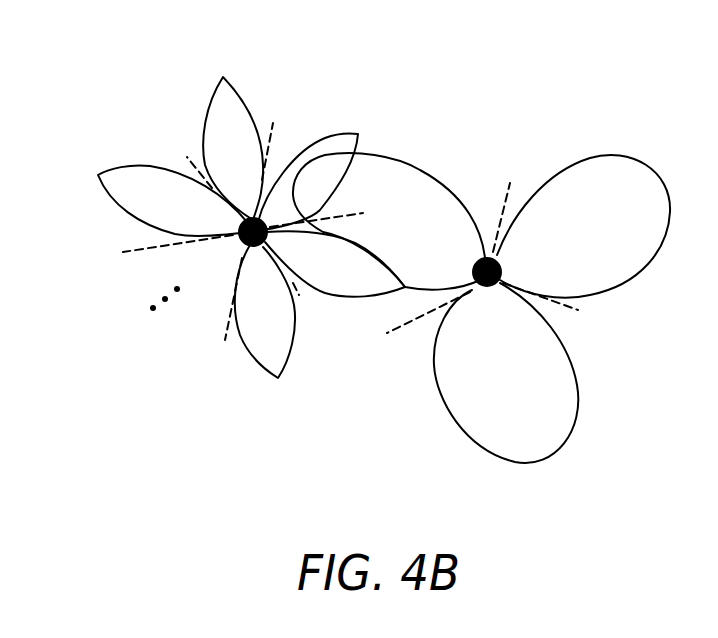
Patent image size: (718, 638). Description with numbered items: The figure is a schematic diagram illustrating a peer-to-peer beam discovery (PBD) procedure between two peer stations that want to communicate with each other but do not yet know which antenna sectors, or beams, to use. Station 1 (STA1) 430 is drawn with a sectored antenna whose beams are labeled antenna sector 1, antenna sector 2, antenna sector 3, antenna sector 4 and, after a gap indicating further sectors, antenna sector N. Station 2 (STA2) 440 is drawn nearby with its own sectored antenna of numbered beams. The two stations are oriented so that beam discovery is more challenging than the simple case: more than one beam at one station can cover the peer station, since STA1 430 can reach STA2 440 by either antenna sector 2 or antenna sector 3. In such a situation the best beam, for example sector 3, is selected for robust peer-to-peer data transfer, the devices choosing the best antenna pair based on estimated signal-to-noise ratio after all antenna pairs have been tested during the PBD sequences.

The Station 1 (STA1) 430 is at (316, 78).
The Station 2 (STA2) 440 is at (587, 124).
The antenna sector (beam) 1 is at (344, 183).
The antenna sector (beam) 2 is at (464, 215).
The antenna sector (beam) 3 is at (421, 347).
The antenna sector (beam) 4 is at (265, 311).
The antenna sector (beam) N is at (172, 200).